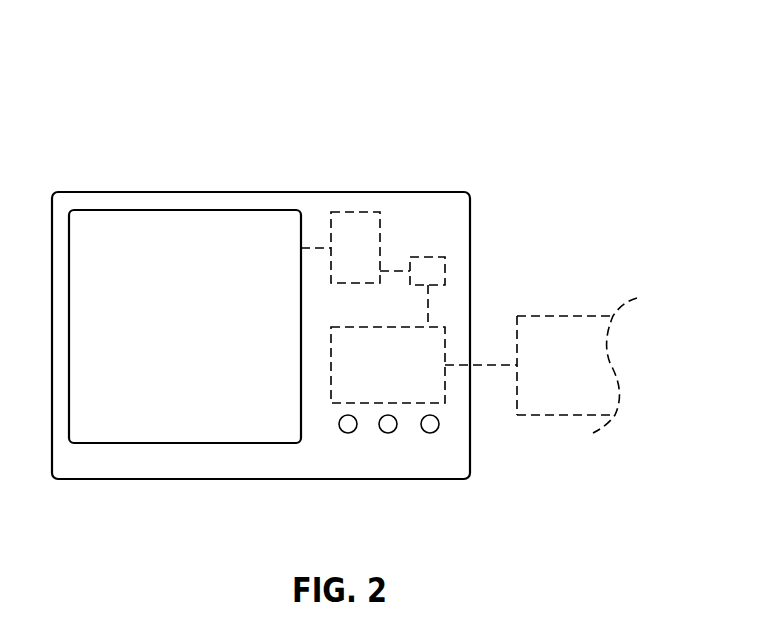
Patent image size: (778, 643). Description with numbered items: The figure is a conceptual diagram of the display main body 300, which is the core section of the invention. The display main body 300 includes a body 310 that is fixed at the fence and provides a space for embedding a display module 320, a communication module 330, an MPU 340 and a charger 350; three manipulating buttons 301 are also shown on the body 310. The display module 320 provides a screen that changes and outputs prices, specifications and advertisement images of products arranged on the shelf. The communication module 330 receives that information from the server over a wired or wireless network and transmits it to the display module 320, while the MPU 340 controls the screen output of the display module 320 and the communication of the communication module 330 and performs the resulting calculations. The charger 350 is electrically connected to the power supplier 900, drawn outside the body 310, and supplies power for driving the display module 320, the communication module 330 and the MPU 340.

The display main body 300 is at (537, 135).
The body 310 is at (212, 192).
The display module 320 is at (262, 220).
The communication module 330 is at (353, 211).
The MPU 340 is at (438, 257).
The charger 350 is at (445, 327).
The manipulating button 301 is at (427, 433).
The power supplier 900 is at (546, 376).